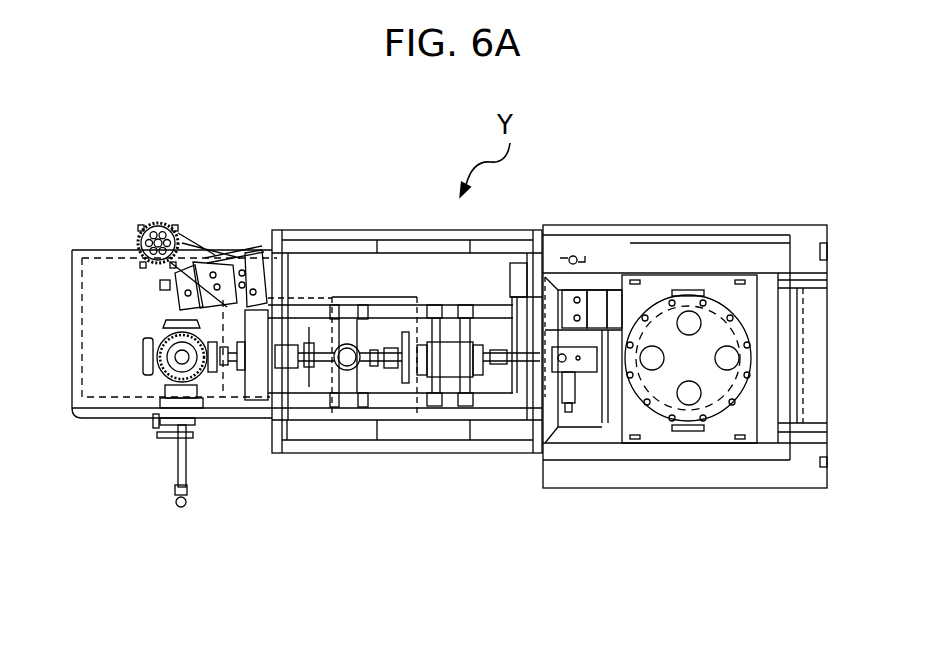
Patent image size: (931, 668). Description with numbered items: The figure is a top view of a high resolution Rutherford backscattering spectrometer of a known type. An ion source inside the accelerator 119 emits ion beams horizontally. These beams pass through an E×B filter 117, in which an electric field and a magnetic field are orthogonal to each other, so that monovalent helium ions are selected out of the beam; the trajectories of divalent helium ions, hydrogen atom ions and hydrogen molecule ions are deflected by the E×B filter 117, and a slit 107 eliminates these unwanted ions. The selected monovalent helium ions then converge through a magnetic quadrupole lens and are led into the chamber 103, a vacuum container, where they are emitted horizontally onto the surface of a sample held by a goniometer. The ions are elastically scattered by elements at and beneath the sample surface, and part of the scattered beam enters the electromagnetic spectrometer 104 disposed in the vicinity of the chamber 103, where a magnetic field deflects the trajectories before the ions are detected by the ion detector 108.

The chamber 103 is at (150, 378).
The electromagnetic spectrometer 104 is at (240, 250).
The slit 107 is at (317, 333).
The ion detector 108 is at (177, 236).
The E×B filter 117 is at (470, 380).
The accelerator 119 is at (690, 285).